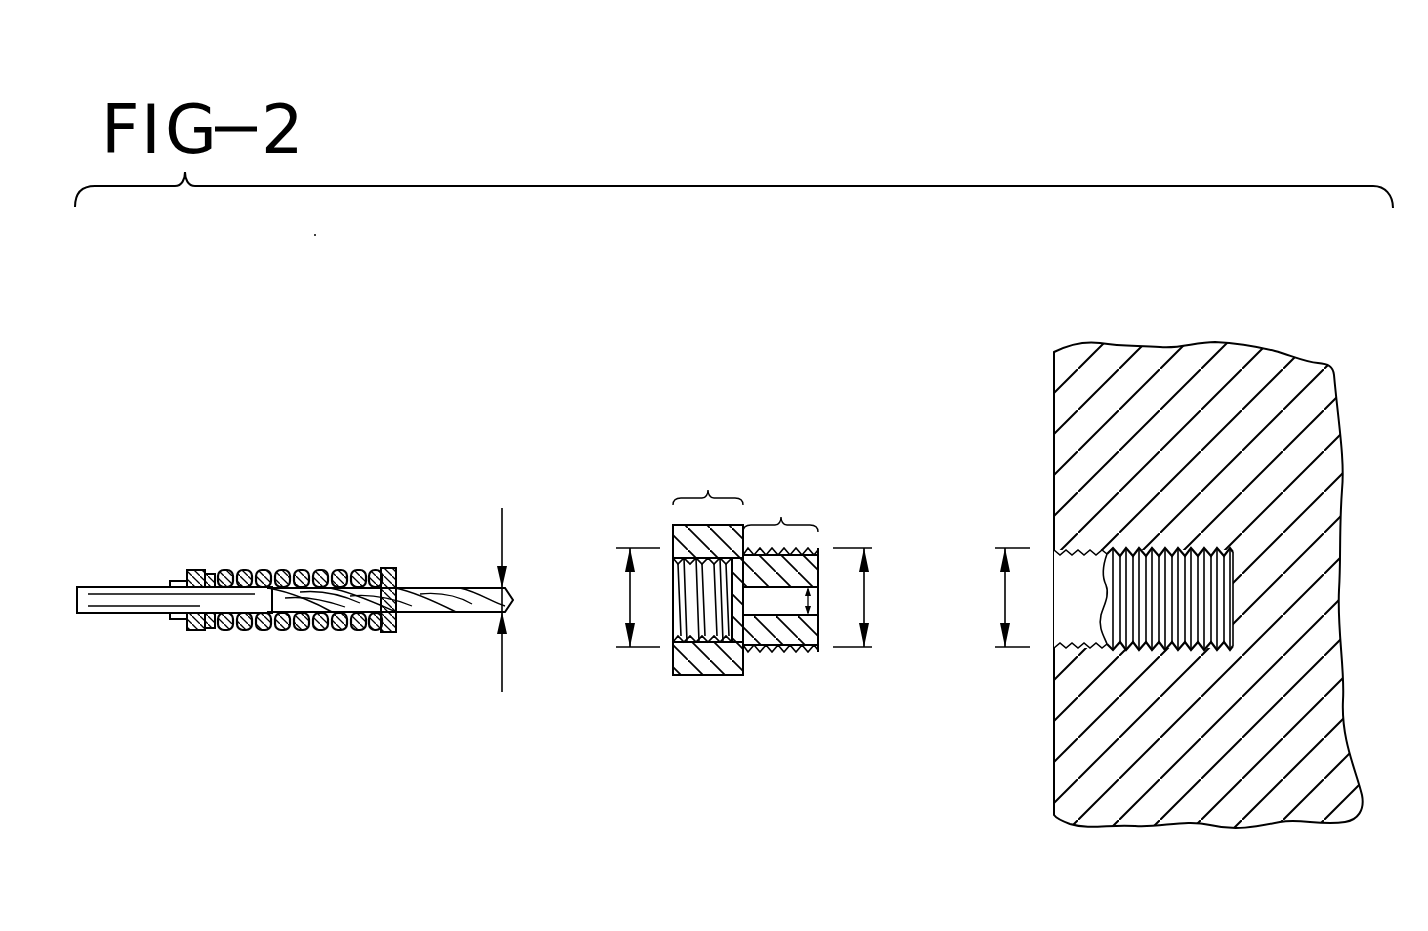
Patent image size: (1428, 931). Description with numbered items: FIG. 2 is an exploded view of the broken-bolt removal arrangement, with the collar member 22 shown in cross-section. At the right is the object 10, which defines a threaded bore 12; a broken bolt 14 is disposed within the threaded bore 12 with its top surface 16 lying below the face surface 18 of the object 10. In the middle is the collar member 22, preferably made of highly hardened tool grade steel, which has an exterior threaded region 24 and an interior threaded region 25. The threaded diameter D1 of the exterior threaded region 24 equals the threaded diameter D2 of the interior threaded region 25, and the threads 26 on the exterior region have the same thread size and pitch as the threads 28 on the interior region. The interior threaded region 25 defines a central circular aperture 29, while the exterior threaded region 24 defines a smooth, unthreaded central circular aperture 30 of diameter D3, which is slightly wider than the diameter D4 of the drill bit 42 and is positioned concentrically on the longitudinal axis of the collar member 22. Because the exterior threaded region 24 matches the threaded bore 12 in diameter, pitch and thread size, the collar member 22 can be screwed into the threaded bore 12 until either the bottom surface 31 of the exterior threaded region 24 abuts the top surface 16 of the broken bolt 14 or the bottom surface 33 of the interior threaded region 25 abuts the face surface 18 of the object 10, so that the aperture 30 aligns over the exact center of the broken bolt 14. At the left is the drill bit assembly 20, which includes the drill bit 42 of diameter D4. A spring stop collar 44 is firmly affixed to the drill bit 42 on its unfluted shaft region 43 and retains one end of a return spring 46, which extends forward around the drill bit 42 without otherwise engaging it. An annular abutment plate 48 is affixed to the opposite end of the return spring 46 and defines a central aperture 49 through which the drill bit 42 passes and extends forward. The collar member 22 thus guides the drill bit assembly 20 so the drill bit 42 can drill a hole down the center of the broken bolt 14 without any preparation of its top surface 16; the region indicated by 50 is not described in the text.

The object 10 is at (1205, 348).
The threaded bore 12 is at (1087, 550).
The broken bolt 14 is at (1196, 601).
The top surface 16 is at (1107, 636).
The face surface 18 is at (1054, 748).
The drill bit assembly 20 is at (235, 556).
The collar member 22 is at (708, 584).
The exterior threaded region 24 is at (781, 523).
The interior threaded region 25 is at (710, 496).
The threads 26 is at (806, 652).
The threads 28 is at (682, 562).
The central circular aperture 29 is at (690, 652).
The central circular aperture 30 is at (780, 606).
The bottom surface 31 is at (820, 555).
The bottom surface 33 is at (745, 652).
The drill bit 42 is at (406, 588).
The unfluted shaft region 43 is at (142, 614).
The spring stop collar 44 is at (190, 570).
The return spring 46 is at (330, 630).
The abutment plate 48 is at (398, 632).
The central aperture 49 is at (350, 590).
The head internal bore 50 is at (702, 622).
The threaded diameter D1 is at (1003, 598).
The threaded diameter D2 is at (628, 598).
The diameter D3 is at (821, 608).
The diameter D4 is at (503, 508).